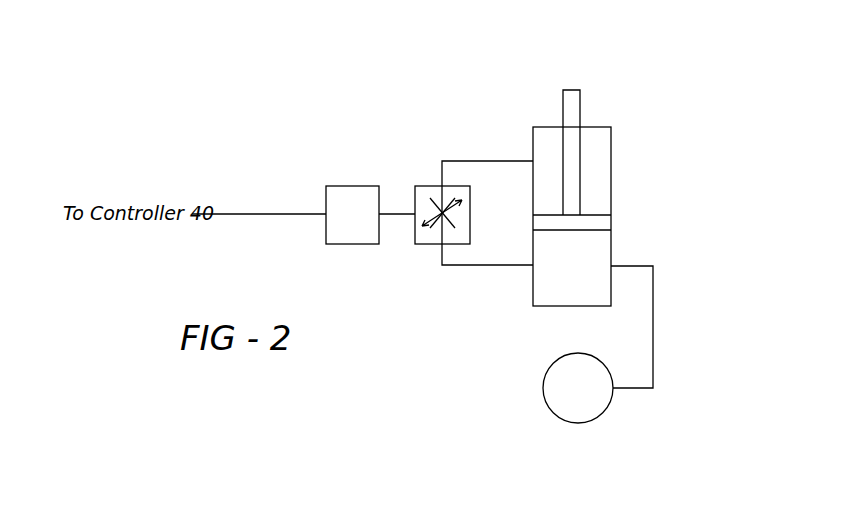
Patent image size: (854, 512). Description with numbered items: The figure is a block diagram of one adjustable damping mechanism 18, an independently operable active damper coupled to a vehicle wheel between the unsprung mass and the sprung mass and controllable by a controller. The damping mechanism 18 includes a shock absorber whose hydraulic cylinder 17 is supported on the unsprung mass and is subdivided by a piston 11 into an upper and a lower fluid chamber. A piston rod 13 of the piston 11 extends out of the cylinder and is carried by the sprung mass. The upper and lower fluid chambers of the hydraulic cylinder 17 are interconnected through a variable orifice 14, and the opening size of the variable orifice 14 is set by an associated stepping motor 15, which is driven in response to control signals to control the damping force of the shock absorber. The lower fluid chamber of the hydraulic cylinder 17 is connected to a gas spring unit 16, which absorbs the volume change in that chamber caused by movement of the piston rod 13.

The piston 11 is at (593, 221).
The piston rod 13 is at (563, 108).
The variable orifice 14 is at (427, 186).
The stepping motor 15 is at (336, 186).
The gas spring unit 16 is at (600, 413).
The hydraulic cylinder 17 is at (612, 152).
The damping mechanism 18 is at (508, 336).